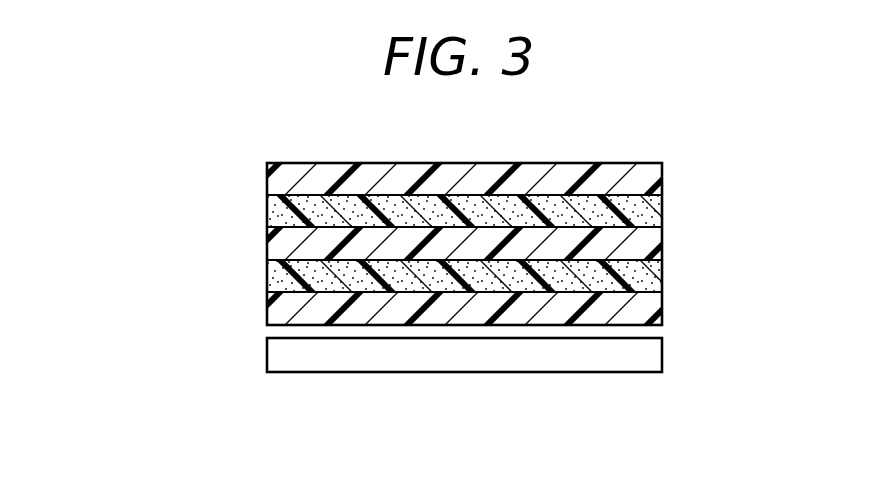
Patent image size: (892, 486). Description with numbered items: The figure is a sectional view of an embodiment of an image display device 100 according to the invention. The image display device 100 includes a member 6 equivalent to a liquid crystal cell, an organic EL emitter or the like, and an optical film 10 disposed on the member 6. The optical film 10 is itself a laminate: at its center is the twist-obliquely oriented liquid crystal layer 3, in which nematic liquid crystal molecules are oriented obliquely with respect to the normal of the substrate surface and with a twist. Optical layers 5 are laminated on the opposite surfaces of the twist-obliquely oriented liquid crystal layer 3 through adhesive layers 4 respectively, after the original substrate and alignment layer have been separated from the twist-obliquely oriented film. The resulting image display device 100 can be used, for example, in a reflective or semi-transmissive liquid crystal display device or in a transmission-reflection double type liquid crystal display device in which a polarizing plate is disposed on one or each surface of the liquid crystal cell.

The image display device 100 is at (646, 145).
The optical film 10 is at (253, 153).
The optical layer 5 is at (648, 173).
The adhesive layer 4 is at (648, 210).
The twist-obliquely oriented liquid crystal layer 3 is at (648, 244).
The member 6 is at (648, 352).